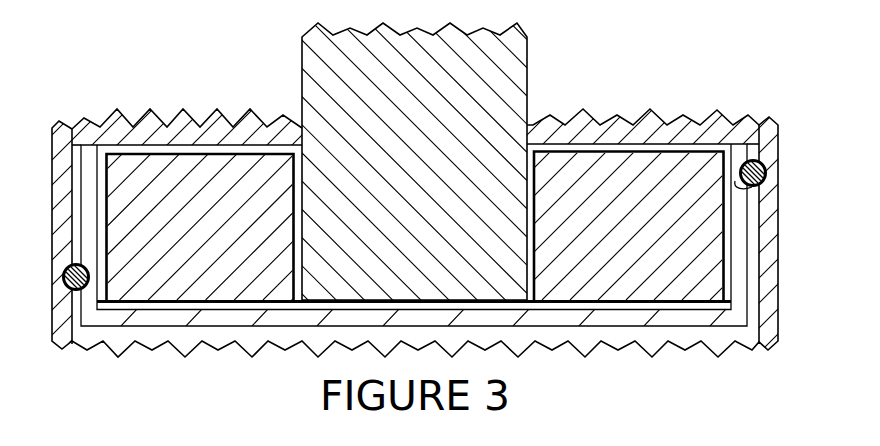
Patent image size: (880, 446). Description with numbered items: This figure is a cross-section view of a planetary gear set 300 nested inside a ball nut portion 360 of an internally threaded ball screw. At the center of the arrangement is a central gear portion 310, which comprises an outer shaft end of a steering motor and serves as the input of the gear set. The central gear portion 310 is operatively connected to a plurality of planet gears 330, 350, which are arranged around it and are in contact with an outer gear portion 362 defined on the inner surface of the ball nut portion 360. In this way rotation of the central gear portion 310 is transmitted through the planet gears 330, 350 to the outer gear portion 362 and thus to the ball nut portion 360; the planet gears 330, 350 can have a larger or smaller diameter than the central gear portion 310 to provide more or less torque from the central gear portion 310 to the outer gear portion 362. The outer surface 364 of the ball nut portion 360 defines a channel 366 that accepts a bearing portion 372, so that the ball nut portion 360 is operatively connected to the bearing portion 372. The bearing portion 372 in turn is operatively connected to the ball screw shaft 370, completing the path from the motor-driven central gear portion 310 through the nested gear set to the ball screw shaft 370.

The planetary gear set 300 is at (48, 29).
The central gear portion 310 is at (527, 105).
The planet gear 330 is at (650, 151).
The planet gear 350 is at (128, 153).
The ball nut portion 360 is at (737, 273).
The outer gear portion 362 is at (207, 152).
The outer surface 364 is at (747, 312).
The channel 366 is at (752, 187).
The ball screw shaft 370 is at (778, 220).
The bearing portion 372 is at (77, 264).